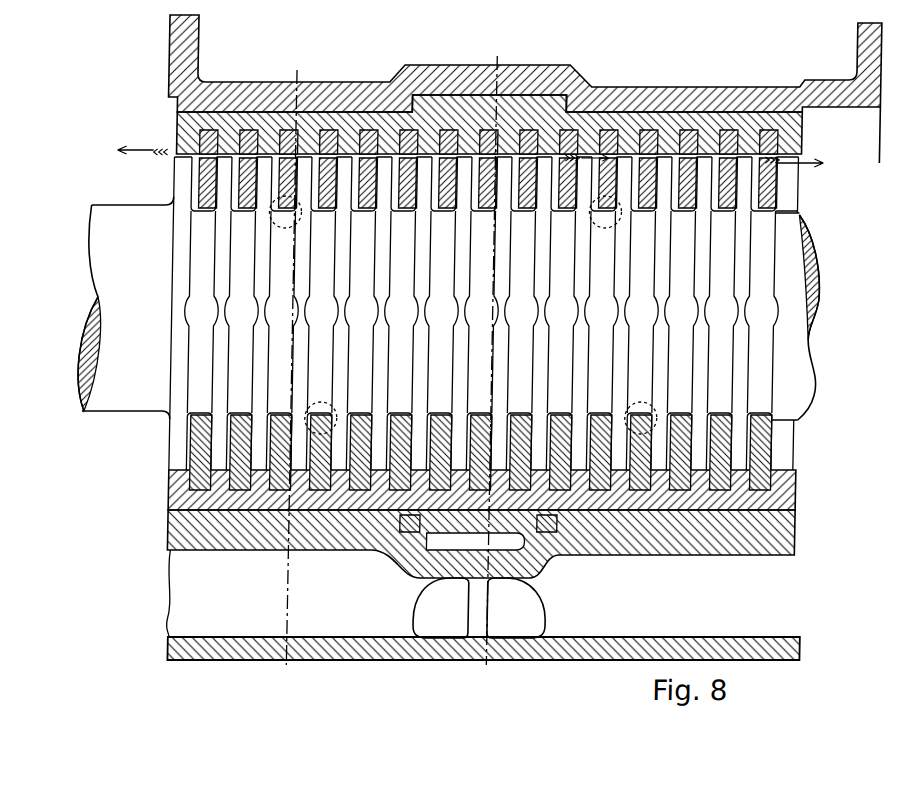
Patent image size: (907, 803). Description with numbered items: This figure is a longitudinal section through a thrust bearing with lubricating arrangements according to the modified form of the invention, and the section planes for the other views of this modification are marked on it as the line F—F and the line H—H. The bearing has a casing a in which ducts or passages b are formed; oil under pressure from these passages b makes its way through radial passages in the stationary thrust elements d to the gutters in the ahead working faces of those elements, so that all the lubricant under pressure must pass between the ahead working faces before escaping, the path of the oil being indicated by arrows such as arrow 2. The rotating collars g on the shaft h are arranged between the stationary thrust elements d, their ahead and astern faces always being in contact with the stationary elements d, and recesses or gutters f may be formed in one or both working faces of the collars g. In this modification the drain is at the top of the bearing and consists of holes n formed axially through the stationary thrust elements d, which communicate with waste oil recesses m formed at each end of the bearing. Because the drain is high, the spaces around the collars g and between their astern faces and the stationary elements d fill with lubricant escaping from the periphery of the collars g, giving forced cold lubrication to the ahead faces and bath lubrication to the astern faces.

The casing a is at (679, 92).
The passages b is at (544, 566).
The stationary thrust elements d is at (236, 212).
The recesses or gutters f is at (450, 306).
The collars g is at (340, 276).
The shaft h is at (138, 213).
The waste oil recesses m is at (535, 622).
The holes n is at (204, 156).
The section line H— H is at (290, 370).
The section line F— F is at (490, 363).
The arrow 2 is at (140, 150).